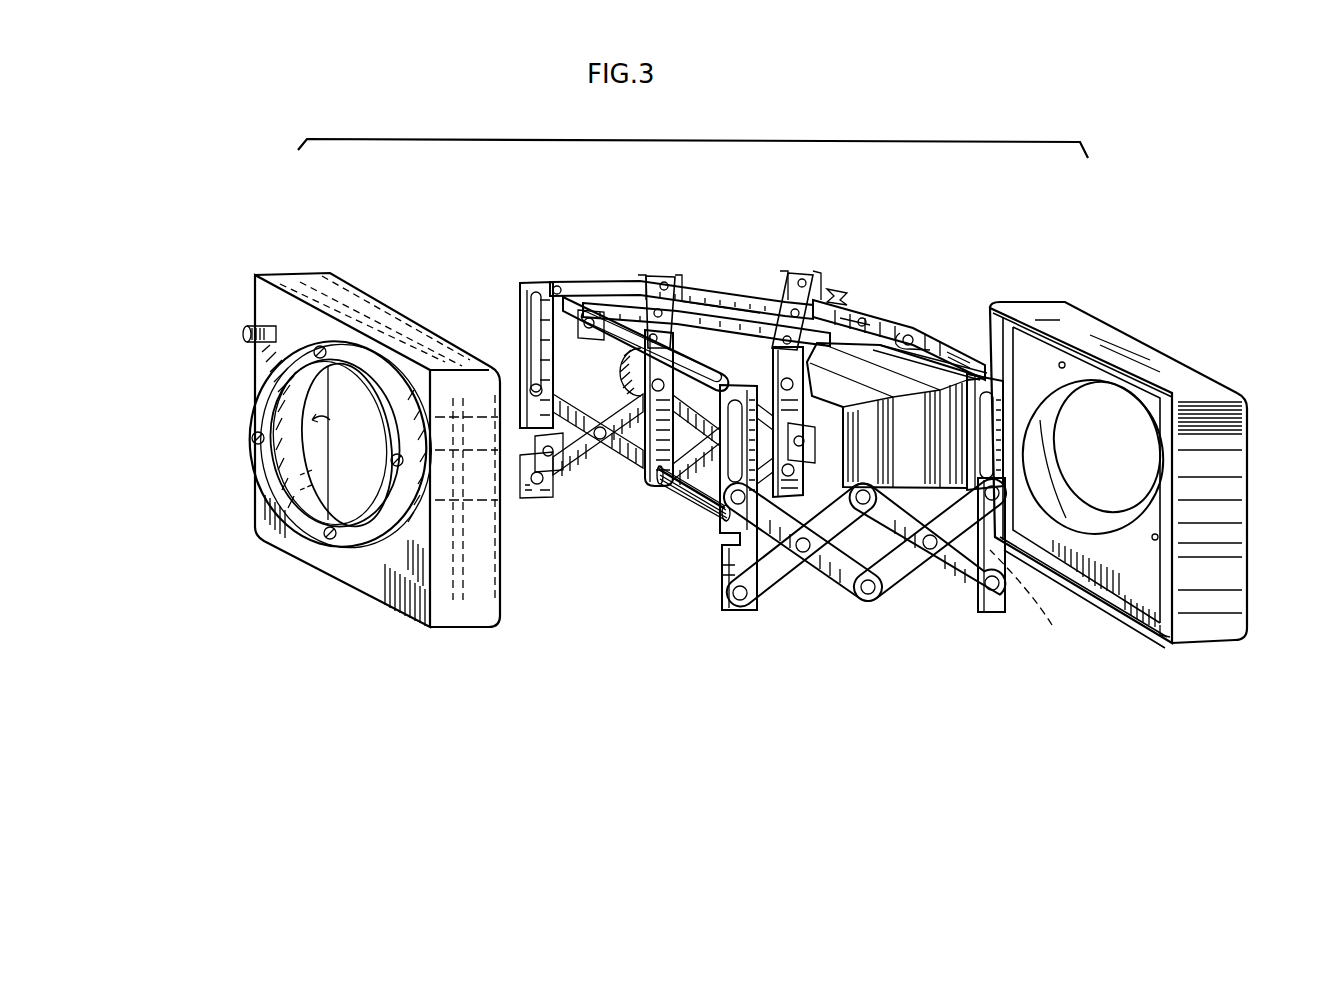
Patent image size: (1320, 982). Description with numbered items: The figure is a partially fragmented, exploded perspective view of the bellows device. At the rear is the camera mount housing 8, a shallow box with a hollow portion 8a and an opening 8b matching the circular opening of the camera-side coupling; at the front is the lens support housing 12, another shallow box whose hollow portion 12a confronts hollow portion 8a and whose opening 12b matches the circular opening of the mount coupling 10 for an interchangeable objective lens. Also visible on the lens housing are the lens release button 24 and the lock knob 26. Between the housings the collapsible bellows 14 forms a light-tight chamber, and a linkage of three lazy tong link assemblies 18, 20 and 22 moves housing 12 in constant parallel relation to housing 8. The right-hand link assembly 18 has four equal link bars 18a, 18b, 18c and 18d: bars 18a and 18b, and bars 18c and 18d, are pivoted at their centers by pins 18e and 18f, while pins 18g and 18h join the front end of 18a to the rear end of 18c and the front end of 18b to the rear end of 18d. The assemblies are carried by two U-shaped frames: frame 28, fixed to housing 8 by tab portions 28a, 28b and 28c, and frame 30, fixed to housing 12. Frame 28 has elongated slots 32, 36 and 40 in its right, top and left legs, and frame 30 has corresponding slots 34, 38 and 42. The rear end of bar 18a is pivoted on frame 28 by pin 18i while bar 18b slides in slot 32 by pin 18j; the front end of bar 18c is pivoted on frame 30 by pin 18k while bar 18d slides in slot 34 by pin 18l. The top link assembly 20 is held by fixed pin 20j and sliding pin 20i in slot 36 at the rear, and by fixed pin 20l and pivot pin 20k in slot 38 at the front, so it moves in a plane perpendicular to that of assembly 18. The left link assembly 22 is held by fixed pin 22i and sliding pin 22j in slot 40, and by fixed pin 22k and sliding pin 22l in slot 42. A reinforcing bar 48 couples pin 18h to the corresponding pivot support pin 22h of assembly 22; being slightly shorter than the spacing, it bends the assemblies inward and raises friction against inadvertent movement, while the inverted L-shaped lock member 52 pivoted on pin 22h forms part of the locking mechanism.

The camera mount housing 8 is at (1133, 489).
The hollow portion 8a is at (1150, 580).
The opening 8b is at (1095, 417).
The mount coupling 10 is at (300, 492).
The lens support housing 12 is at (341, 469).
The hollow portion 12a is at (343, 443).
The opening 12b is at (348, 500).
The collapsible bellows 14 is at (921, 442).
The link assembly 18 is at (868, 590).
The link bar 18a is at (963, 598).
The link bar 18b is at (897, 595).
The link bar 18c is at (820, 548).
The link bar 18d is at (790, 556).
The pin 18e is at (928, 550).
The pin 18f is at (803, 553).
The pin 18g is at (863, 505).
The pin 18h is at (866, 596).
The pin 18i is at (992, 591).
The pin 18j is at (1000, 493).
The pin 18k is at (738, 600).
The pin 18l is at (735, 510).
The link assembly 20 is at (769, 274).
The pin 20i is at (866, 324).
The fixed pivotally supporting pin 20j is at (801, 278).
The pivot pin 20k is at (652, 333).
The fixed pivotally supporting pin 20l is at (557, 286).
The link assembly 22 is at (641, 376).
The pivot support pin 22h is at (653, 493).
The fixed pivot support pin 22i is at (782, 467).
The pin 22j is at (827, 296).
The fixed pivot support pin 22k is at (560, 474).
The pin 22l is at (550, 390).
The lens release button 24 is at (250, 332).
The lock knob 26 is at (617, 377).
The U-shaped frame 28 is at (784, 311).
The tab portion 28a is at (1038, 601).
The tab portion 28b is at (855, 312).
The tab portion 28c is at (822, 392).
The U-shaped frame 30 is at (494, 329).
The elongated slot 32 is at (987, 410).
The elongated slot 34 is at (858, 476).
The elongated slot 36 is at (947, 360).
The elongated slot 38 is at (690, 348).
The elongated slot 40 is at (676, 294).
The elongated slot 42 is at (522, 352).
The reinforcing bar 48 is at (695, 480).
The lock member 52 is at (623, 467).